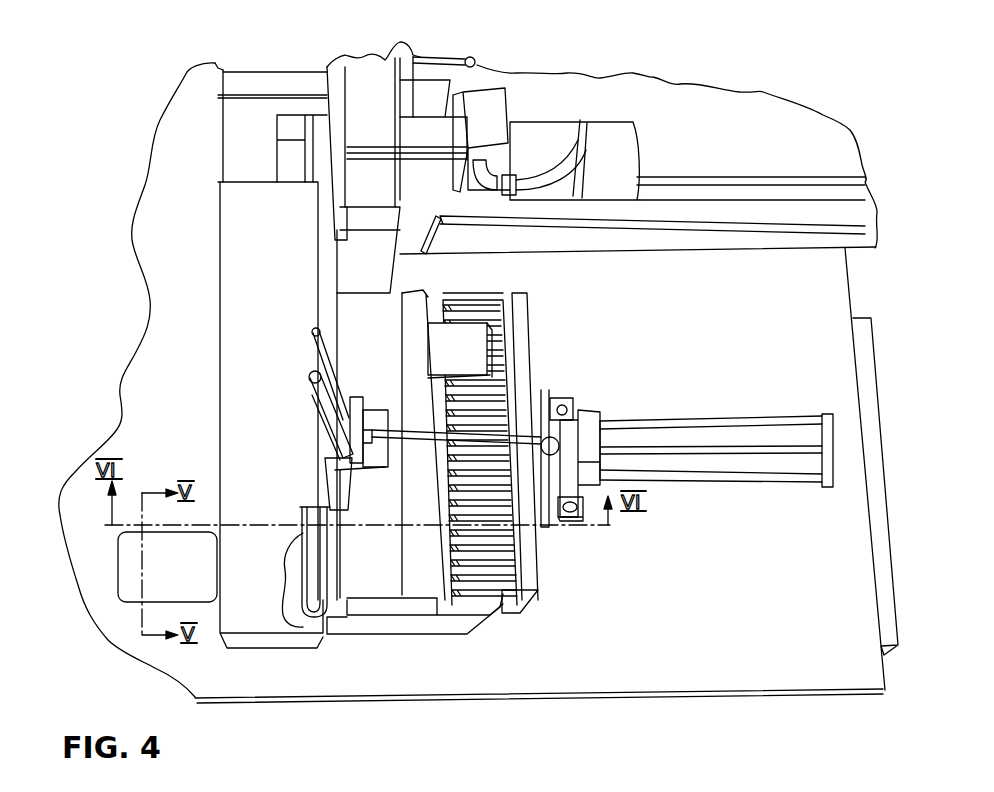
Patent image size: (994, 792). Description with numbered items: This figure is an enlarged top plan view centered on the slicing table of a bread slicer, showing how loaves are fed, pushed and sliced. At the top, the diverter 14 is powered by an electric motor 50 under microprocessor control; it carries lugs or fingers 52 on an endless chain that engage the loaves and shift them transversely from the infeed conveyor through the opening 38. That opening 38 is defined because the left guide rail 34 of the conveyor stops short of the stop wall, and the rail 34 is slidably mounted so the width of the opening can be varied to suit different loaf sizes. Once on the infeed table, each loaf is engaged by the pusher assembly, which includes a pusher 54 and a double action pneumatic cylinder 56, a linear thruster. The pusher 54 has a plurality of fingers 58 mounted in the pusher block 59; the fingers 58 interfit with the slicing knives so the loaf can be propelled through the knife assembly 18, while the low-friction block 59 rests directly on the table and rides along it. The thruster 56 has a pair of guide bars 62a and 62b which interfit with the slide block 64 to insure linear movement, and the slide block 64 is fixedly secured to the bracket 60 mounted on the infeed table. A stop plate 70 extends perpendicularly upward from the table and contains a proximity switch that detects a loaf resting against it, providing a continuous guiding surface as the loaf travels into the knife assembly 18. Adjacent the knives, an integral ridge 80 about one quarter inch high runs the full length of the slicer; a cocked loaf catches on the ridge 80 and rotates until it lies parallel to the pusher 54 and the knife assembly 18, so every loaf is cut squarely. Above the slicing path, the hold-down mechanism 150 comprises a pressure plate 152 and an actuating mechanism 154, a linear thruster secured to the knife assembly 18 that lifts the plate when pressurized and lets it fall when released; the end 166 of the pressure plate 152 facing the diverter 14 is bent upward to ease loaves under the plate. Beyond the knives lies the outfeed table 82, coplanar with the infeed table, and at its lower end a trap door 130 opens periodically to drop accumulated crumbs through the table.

The diverter 14 is at (357, 70).
The knife assembly 18 is at (272, 367).
The left guide rail 34 is at (657, 237).
The opening 38 is at (413, 225).
The electric motor 50 is at (613, 137).
The lugs or fingers 52 is at (703, 610).
The pusher 54 is at (532, 607).
The double action pneumatic cylinder 56 is at (753, 457).
The fingers 58 is at (492, 560).
The pusher block 59 is at (535, 560).
The bracket 60 is at (583, 523).
The guide bar 62a is at (680, 483).
The guide bar 62b is at (665, 413).
The slide block 64 is at (572, 428).
The stop plate 70 is at (367, 625).
The ridge 80 is at (303, 560).
The outfeed table 82 is at (163, 437).
The trap door 130 is at (190, 570).
The hold-down mechanism 150 is at (300, 435).
The pressure plate 152 is at (388, 508).
The actuating mechanism 154 is at (360, 388).
The end of pressure plate 166 is at (408, 263).